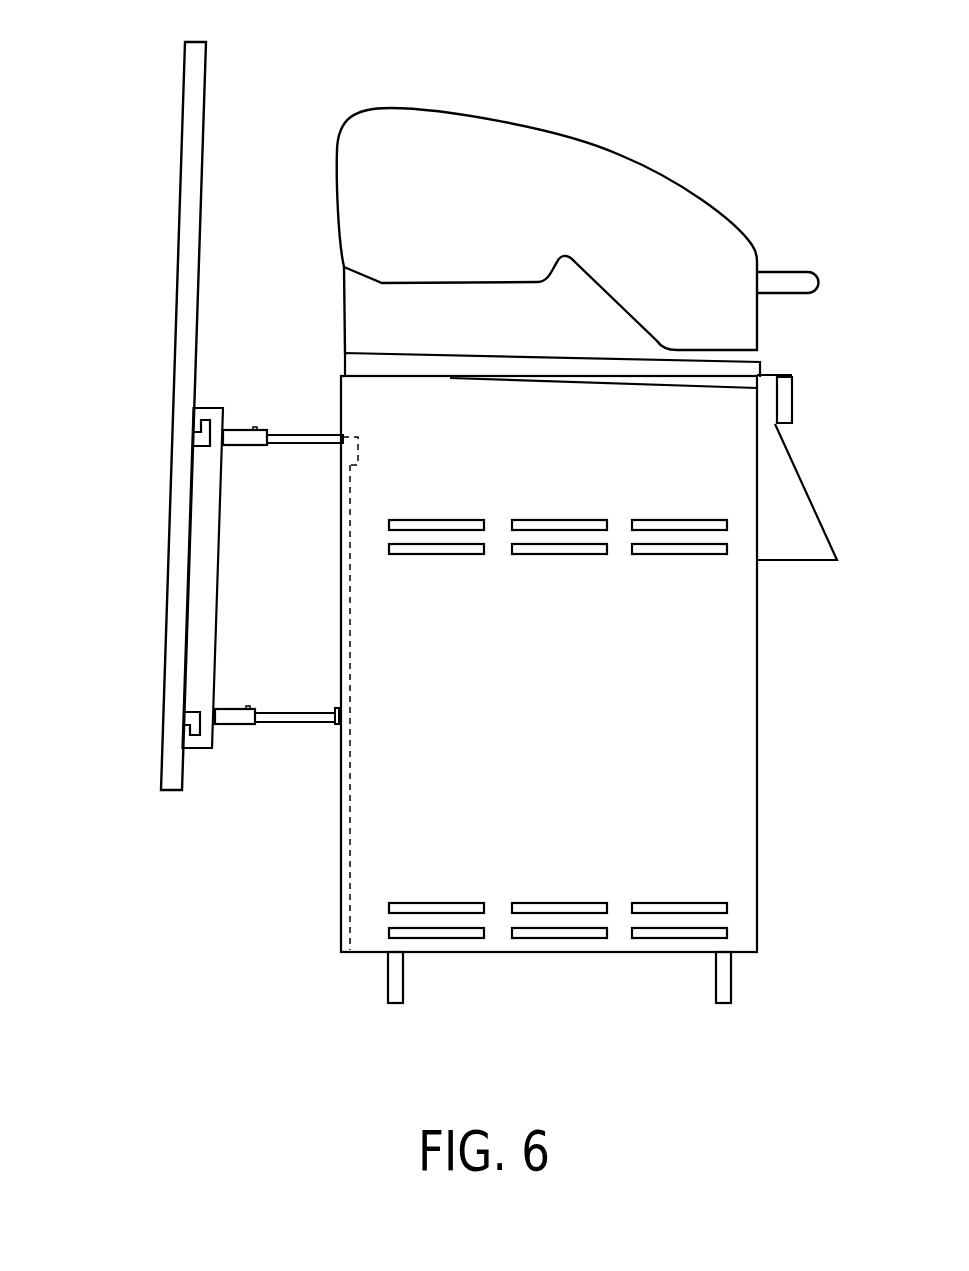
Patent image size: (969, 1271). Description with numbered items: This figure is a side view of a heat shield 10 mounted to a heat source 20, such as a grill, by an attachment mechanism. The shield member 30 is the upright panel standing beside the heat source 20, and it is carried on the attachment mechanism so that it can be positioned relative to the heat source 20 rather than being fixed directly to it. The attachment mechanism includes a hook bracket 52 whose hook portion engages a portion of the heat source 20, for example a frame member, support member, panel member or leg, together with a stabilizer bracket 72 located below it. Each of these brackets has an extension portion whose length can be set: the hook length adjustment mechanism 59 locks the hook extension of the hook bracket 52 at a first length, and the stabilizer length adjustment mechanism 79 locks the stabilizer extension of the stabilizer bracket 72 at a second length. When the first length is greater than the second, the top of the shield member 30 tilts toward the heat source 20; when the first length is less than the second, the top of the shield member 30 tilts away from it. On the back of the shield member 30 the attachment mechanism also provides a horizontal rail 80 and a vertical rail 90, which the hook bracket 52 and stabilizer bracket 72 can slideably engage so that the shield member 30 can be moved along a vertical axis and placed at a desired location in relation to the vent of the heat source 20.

The heat shield 10 is at (261, 99).
The heat source 20 is at (565, 215).
The shield member 30 is at (195, 72).
The hook bracket 52 is at (323, 436).
The hook length adjustment mechanism 59 is at (266, 396).
The stabilizer bracket 72 is at (233, 718).
The stabilizer length adjustment mechanism 79 is at (268, 738).
The horizontal rail 80 is at (193, 720).
The vertical rail 90 is at (207, 643).